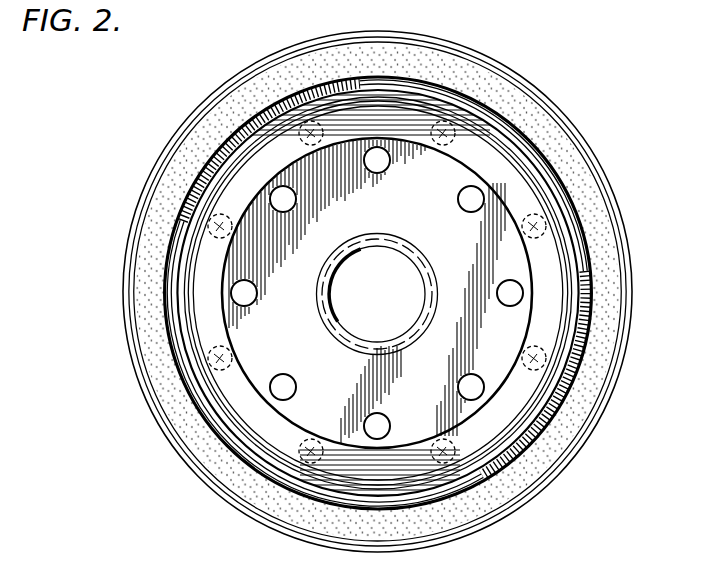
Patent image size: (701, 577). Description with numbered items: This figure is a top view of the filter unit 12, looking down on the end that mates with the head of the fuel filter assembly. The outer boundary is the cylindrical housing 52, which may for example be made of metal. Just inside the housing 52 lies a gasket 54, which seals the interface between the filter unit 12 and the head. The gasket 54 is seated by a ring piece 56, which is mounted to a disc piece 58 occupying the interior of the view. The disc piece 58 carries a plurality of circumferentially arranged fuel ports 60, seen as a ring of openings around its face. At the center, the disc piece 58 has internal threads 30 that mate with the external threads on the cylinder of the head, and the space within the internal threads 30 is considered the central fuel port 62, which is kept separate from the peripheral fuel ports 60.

The filter unit 12 is at (603, 494).
The internal threads 30 is at (424, 305).
The cylindrical housing 52 is at (599, 172).
The gasket 54 is at (612, 247).
The ring piece 56 is at (582, 360).
The disc piece 58 is at (247, 273).
The fuel ports 60 is at (507, 305).
The central fuel port 62 is at (376, 318).